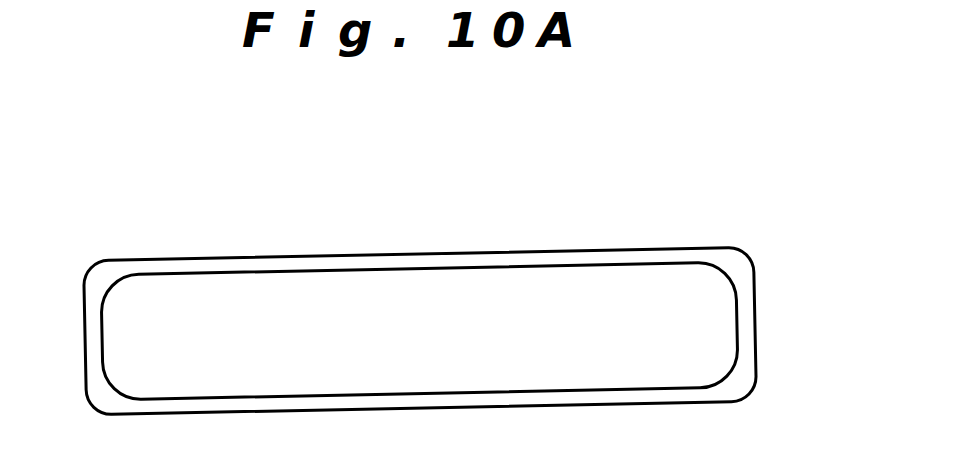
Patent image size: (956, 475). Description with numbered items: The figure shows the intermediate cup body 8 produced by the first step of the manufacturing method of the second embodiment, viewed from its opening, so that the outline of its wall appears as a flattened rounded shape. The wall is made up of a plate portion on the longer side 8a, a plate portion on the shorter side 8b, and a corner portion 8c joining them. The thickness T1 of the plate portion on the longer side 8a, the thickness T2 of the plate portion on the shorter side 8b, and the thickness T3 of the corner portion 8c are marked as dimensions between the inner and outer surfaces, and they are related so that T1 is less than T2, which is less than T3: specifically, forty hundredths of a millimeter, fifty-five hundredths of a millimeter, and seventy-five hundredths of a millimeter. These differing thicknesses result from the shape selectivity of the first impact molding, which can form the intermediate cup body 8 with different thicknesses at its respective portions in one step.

The intermediate cup body 8 is at (217, 260).
The plate portion on the longer side 8a is at (325, 267).
The plate portion on the shorter side 8b is at (98, 348).
The corner portion 8c is at (110, 288).
The thickness of the plate portion on the longer side T1 is at (404, 305).
The thickness of the plate portion on the shorter side T2 is at (705, 322).
The thickness of the corner portion T3 is at (692, 303).